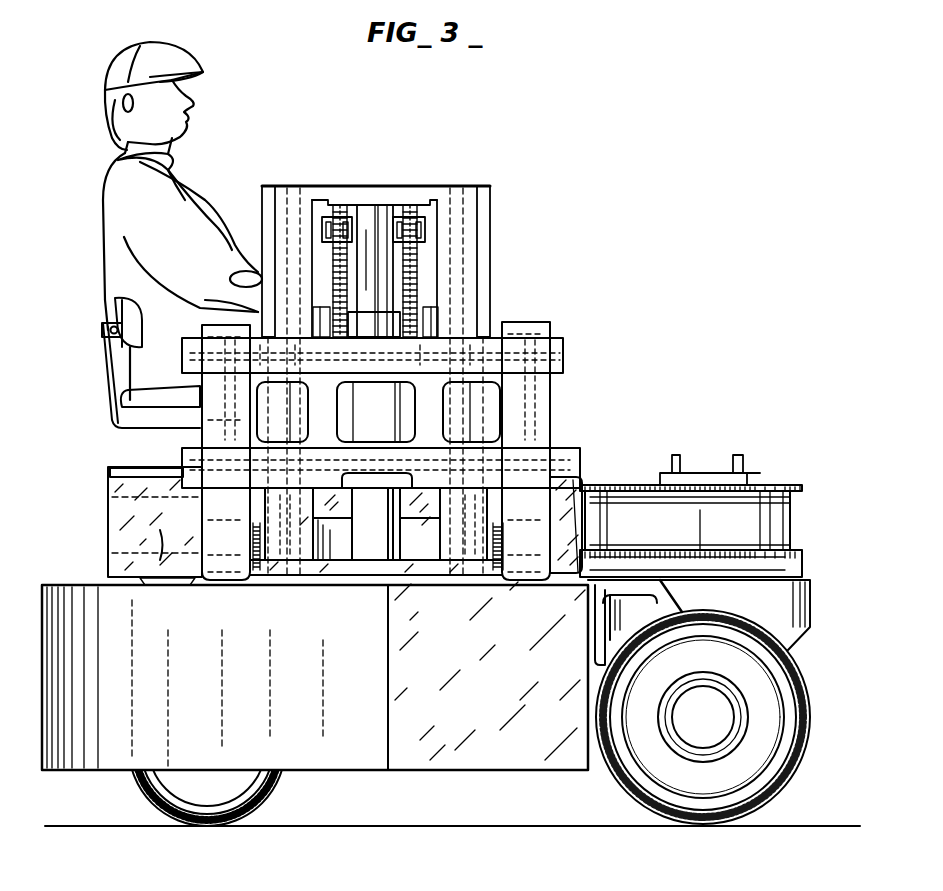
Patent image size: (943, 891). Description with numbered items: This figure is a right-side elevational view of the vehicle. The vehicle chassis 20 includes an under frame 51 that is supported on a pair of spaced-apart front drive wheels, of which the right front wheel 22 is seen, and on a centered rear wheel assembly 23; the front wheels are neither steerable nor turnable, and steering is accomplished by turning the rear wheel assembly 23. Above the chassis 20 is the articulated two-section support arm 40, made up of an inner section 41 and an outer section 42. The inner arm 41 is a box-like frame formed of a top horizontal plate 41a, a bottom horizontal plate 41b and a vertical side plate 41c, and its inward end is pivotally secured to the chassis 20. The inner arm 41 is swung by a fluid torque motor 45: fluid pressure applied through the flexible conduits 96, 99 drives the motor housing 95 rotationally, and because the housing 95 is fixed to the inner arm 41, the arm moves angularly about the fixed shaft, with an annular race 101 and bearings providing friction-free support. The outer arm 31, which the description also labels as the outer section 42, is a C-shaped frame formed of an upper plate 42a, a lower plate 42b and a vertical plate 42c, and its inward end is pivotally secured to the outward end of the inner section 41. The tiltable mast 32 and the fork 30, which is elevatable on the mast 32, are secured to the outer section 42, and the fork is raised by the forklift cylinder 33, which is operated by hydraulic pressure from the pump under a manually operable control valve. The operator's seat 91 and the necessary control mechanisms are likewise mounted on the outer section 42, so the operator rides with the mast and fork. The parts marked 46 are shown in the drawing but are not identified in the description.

The chassis 20 is at (315, 676).
The right front wheel 22 is at (790, 677).
The rear wheel assembly 23 is at (282, 790).
The fork 30 is at (565, 352).
The outer arm 31 is at (226, 581).
The mast 32 is at (492, 212).
The forklift cylinder 33 is at (372, 548).
The articulated two-section support arm 40 is at (691, 531).
The inner section 41 is at (745, 565).
The top horizontal plate 41a is at (611, 486).
The bottom horizontal plate 41b is at (792, 540).
The vertical side plate 41c is at (785, 512).
The outer section 42 is at (135, 520).
The upper plate 42a is at (577, 480).
The lower plate 42b is at (565, 582).
The vertical plate 42c is at (180, 570).
The fluid torque motor 45 is at (702, 470).
The ratchet pawls 46 is at (262, 510).
The under frame 51 is at (793, 597).
The seat 91 is at (182, 404).
The motor housing 95 is at (755, 473).
The flexible conduit 96 is at (735, 458).
The flexible conduit 99 is at (672, 458).
The annular race 101 is at (790, 565).